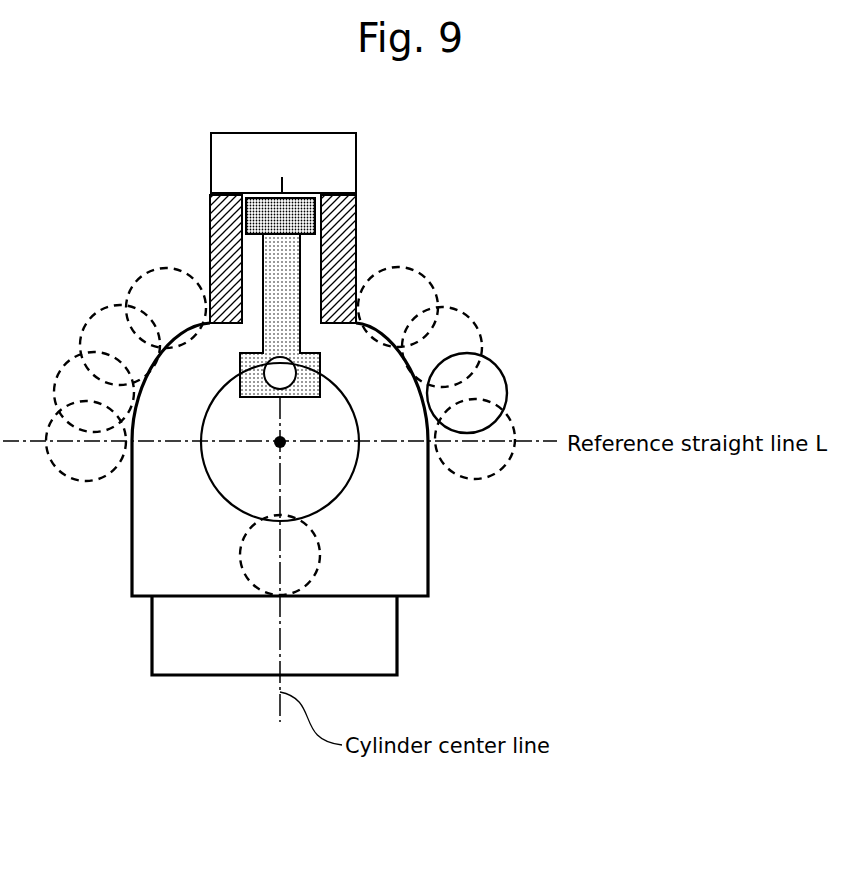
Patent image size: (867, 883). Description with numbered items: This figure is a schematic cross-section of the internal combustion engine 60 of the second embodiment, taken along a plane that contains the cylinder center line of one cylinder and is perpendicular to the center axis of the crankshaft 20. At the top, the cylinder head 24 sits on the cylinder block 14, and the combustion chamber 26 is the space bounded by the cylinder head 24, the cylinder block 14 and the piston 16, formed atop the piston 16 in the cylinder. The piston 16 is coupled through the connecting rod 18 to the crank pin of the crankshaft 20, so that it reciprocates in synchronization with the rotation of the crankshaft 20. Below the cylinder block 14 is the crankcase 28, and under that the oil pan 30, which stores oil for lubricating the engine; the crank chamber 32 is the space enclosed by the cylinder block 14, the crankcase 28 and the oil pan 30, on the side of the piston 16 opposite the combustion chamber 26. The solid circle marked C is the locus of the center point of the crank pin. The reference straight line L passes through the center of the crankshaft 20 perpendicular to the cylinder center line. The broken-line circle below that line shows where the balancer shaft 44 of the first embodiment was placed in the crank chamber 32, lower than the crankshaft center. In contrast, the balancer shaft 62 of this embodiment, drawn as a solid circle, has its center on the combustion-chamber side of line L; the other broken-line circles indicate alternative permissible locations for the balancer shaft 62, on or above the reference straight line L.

The internal combustion engine 60 is at (478, 140).
The cylinder head 24 is at (328, 153).
The combustion chamber 26 is at (265, 195).
The cylinder block 14 is at (356, 222).
The piston 16 is at (297, 213).
The connecting rod 18 is at (263, 262).
The crankcase 28 is at (430, 572).
The oil pan 30 is at (397, 662).
The locus of the center point of the crank pin C is at (350, 407).
The crankshaft 20 is at (280, 442).
The crank chamber 32 is at (372, 531).
The balancer shaft 62 is at (508, 382).
The balancer shaft 44 is at (323, 575).